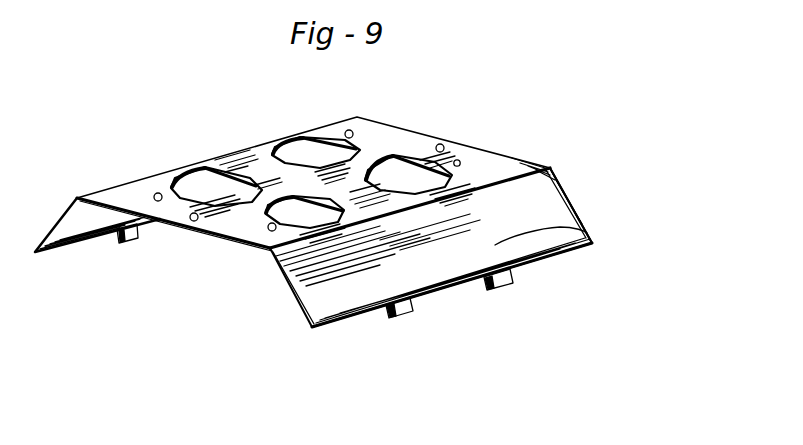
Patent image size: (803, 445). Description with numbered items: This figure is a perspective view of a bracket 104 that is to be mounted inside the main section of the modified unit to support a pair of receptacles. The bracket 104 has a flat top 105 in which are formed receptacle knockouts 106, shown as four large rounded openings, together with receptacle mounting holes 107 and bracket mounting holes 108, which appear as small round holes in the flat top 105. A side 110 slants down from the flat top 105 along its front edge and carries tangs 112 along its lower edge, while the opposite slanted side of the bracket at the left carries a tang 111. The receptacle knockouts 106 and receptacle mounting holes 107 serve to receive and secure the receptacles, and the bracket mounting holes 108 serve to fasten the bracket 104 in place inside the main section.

The bracket 104 is at (355, 217).
The flat top 105 is at (124, 199).
The receptacle knockouts 106 is at (175, 178).
The receptacle mounting holes 107 is at (157, 193).
The bracket mounting holes 108 is at (440, 144).
The side 110 is at (587, 233).
The tang 111 is at (122, 244).
The tangs 112 is at (400, 315).